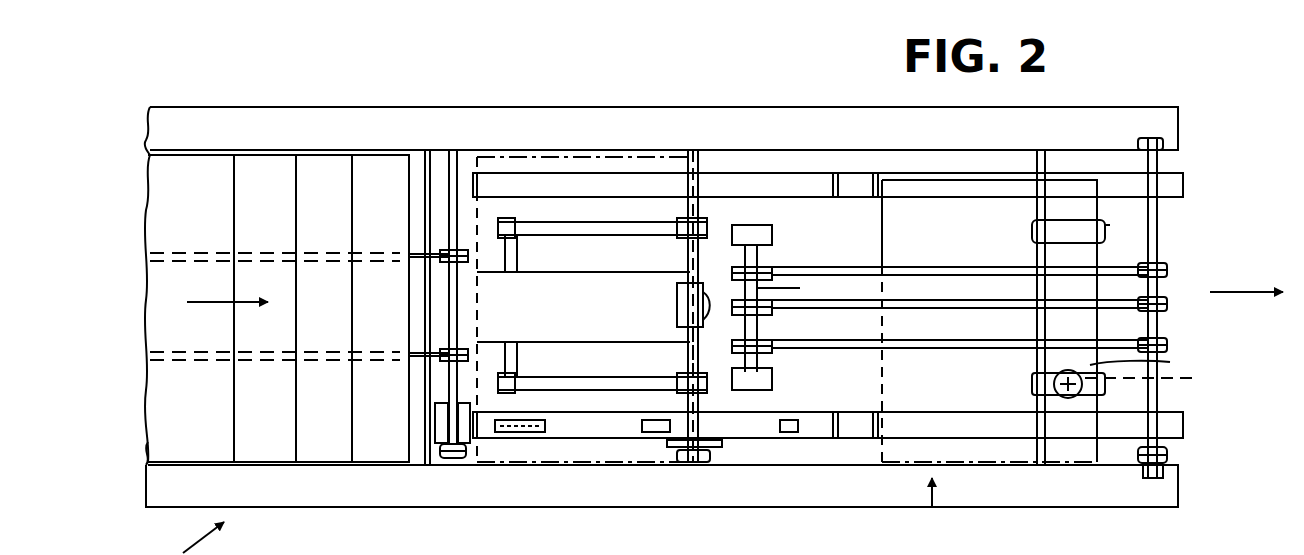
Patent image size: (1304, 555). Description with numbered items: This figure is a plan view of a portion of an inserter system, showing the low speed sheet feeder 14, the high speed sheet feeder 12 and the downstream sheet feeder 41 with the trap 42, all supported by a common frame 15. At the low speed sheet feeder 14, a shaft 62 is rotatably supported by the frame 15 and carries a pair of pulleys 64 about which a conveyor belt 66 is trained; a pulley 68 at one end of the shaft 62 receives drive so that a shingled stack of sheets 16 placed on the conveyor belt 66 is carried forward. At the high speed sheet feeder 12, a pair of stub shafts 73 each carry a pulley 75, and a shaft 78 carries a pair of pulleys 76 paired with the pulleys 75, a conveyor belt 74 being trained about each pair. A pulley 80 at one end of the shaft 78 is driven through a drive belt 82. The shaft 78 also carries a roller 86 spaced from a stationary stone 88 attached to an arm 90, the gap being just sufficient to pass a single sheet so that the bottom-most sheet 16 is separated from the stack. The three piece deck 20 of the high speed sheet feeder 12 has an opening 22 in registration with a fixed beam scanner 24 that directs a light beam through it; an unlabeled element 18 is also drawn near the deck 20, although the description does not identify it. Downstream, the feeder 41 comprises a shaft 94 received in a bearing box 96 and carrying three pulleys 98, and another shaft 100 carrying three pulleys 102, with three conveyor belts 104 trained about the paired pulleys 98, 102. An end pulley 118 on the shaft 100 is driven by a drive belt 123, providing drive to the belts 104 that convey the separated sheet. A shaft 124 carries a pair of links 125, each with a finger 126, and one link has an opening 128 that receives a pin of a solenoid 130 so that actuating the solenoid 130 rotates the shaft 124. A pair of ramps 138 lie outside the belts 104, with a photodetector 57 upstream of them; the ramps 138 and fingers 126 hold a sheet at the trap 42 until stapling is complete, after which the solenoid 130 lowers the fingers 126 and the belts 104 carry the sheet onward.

The high speed sheet feeder 12 is at (556, 132).
The low speed sheet feeder 14 is at (238, 130).
The frame 15 is at (334, 107).
The sheets 16 is at (508, 158).
The bracket 18 is at (503, 432).
The three piece deck 20 is at (646, 173).
The opening 22 is at (575, 432).
The fixed beam scanner 24 is at (655, 438).
The sheet feeder 41 is at (800, 132).
The trap 42 is at (932, 511).
The photodetector 57 is at (793, 438).
The shafts 62 is at (437, 160).
The pulleys 64 is at (446, 250).
The conveyor belt 66 is at (412, 262).
The pulley 68 is at (440, 460).
The stub shafts 73 is at (520, 254).
The conveyor belt 74 is at (414, 323).
The pulleys 75 is at (510, 250).
The pulleys 76 is at (678, 232).
The shaft 78 is at (702, 160).
The pulley 80 is at (692, 448).
The drive belt 82 is at (725, 458).
The roller 86 is at (757, 303).
The stationary stone 88 is at (712, 320).
The arm 90 is at (678, 306).
The shaft 94 is at (758, 252).
The bearing box 96 is at (773, 230).
The pulleys 98 is at (738, 268).
The shaft 100 is at (1160, 216).
The pulleys 102 is at (1167, 272).
The conveyor belts 104 is at (970, 300).
The end pulley 118 is at (1175, 470).
The drive belt 123 is at (1168, 456).
The shaft 124 is at (1042, 355).
The links 125 is at (1032, 230).
The finger 126 is at (1108, 240).
The opening 128 is at (1146, 384).
The solenoid 130 is at (1172, 362).
The ramps 138 is at (862, 178).